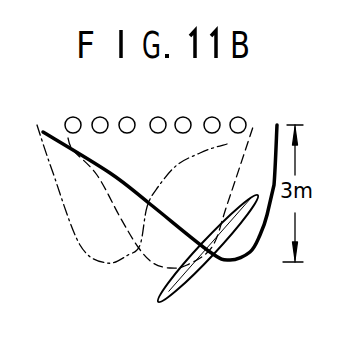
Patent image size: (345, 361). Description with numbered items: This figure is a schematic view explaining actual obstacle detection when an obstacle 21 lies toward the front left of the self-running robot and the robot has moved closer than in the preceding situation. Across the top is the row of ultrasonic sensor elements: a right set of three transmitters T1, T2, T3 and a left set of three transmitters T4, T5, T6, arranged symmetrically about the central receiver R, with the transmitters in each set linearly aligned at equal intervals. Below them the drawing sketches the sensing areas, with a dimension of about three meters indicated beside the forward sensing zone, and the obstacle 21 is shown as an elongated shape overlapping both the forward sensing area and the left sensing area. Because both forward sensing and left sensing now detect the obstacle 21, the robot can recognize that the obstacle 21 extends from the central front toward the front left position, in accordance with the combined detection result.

The obstacle 21 is at (203, 270).
The transmitter T1 is at (69, 111).
The transmitter T2 is at (98, 111).
The transmitter T3 is at (127, 111).
The receiver R is at (157, 111).
The transmitter T4 is at (181, 111).
The transmitter T5 is at (212, 111).
The transmitter T6 is at (243, 111).